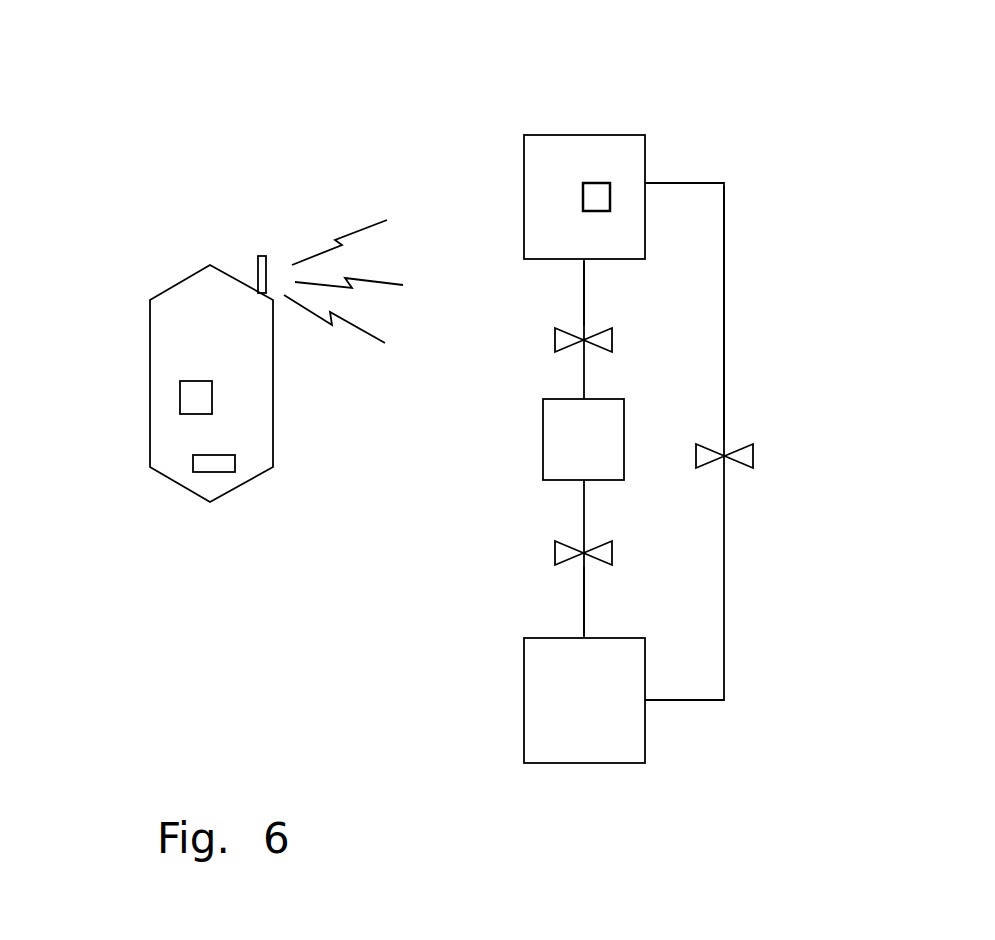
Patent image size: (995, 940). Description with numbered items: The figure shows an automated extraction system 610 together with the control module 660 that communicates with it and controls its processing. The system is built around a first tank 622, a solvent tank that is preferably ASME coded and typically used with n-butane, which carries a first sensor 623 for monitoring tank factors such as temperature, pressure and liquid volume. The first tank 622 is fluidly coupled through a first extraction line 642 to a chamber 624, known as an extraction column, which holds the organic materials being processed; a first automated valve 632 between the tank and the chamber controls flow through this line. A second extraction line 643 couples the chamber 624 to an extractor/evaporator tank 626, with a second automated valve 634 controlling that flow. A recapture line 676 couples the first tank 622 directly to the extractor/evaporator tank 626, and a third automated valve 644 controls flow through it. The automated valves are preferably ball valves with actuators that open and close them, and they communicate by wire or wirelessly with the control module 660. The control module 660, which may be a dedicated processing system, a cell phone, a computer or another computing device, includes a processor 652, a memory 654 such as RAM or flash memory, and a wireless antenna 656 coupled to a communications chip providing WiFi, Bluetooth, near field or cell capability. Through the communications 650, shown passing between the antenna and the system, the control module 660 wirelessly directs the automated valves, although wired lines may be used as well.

The automated extraction system 610 is at (545, 100).
The first tank 622 is at (633, 158).
The first sensor 623 is at (600, 195).
The chamber 624 is at (563, 443).
The extractor/evaporator tank 626 is at (573, 743).
The first automated valve 632 is at (560, 340).
The second automated valve 634 is at (555, 553).
The first extraction line 642 is at (588, 302).
The second extraction line 643 is at (584, 603).
The third automated valve 644 is at (755, 456).
The communications 650 is at (353, 197).
The processor 652 is at (187, 400).
The memory 654 is at (222, 465).
The wireless antenna 656 is at (257, 262).
The control module 660 is at (185, 307).
The recapture line 676 is at (726, 303).